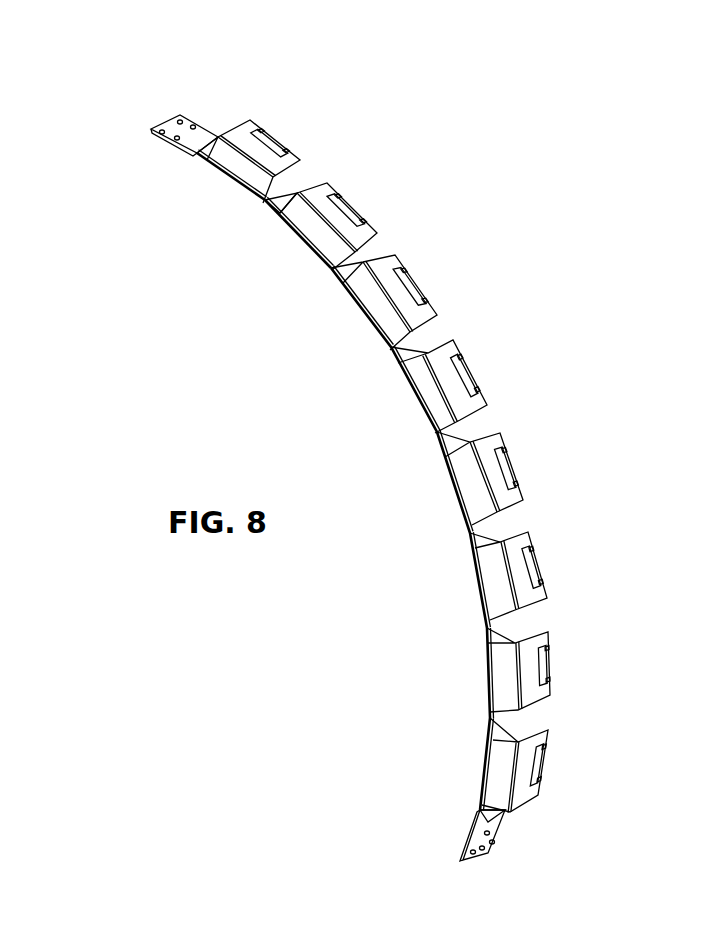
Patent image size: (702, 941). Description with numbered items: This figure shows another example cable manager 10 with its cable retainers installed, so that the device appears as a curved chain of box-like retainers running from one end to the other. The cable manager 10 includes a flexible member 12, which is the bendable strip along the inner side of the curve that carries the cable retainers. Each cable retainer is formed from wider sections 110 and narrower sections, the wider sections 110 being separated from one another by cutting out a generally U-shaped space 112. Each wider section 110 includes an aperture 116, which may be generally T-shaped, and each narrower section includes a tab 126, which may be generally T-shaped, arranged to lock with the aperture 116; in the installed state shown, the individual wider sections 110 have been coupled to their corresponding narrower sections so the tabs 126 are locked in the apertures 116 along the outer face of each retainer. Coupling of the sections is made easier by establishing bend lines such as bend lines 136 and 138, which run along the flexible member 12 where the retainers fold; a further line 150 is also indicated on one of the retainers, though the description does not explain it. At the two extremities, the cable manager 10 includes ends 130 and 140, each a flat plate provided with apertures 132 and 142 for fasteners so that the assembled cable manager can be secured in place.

The cable manager 10 is at (118, 50).
The flexible member 12 is at (236, 194).
The section 110 is at (305, 235).
The U-shaped space 112 is at (305, 181).
The aperture 116 is at (367, 220).
The tab 126 is at (339, 193).
The end 130 is at (151, 128).
The aperture 132 is at (178, 115).
The bend line 136 is at (312, 252).
The bend line 138 is at (328, 262).
The end 140 is at (463, 860).
The aperture 142 is at (483, 853).
The fold line 150 is at (362, 265).